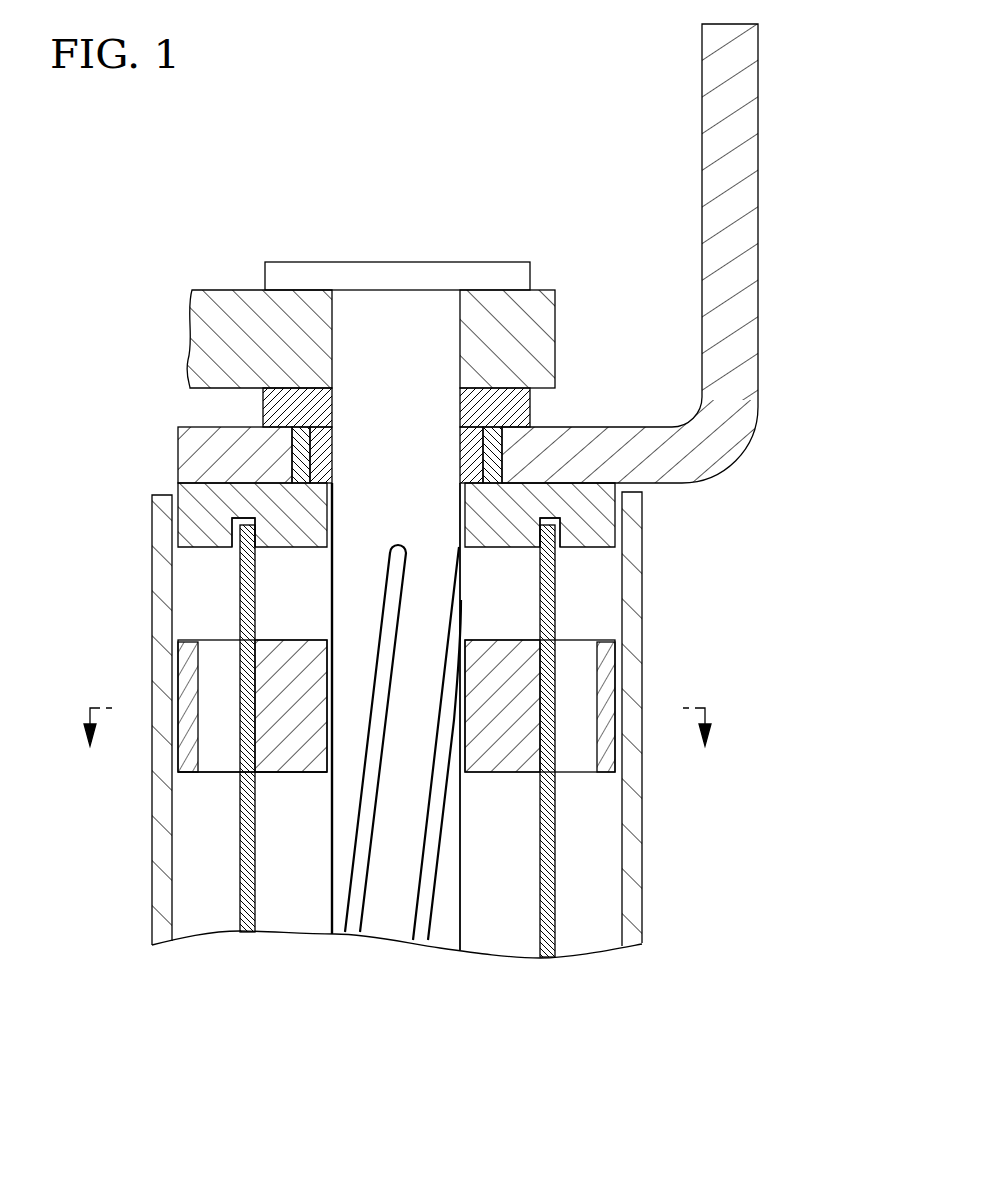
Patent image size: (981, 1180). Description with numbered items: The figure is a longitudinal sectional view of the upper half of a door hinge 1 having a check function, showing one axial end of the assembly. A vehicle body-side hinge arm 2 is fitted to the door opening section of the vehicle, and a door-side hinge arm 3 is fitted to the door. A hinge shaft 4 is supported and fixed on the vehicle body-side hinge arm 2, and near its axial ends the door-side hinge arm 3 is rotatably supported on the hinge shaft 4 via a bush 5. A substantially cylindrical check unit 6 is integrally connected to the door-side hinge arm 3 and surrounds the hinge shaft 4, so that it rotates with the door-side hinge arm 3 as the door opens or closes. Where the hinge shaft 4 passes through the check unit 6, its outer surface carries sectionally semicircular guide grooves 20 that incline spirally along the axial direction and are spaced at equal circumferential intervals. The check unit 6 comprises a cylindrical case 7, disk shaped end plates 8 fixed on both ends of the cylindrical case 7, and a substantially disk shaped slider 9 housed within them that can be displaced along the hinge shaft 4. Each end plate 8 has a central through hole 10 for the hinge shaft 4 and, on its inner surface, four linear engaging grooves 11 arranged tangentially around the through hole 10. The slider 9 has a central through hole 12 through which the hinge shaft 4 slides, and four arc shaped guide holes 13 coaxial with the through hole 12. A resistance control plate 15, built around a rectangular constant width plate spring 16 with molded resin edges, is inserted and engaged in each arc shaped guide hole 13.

The door hinge 1 is at (808, 104).
The vehicle body-side hinge arm 2 is at (237, 303).
The door-side hinge arm 3 is at (757, 200).
The hinge shaft 4 is at (398, 303).
The bush 5 is at (527, 410).
The check unit 6 is at (650, 867).
The cylindrical case 7 is at (644, 598).
The end plate 8 is at (193, 516).
The slider 9 is at (183, 750).
The through hole 10 is at (328, 500).
The engaging groove 11 is at (238, 520).
The through hole 12 is at (327, 708).
The arc shaped guide hole 13 is at (193, 714).
The resistance control plate 15 is at (397, 768).
The plate spring 16 is at (240, 908).
The guide groove 20 is at (427, 902).